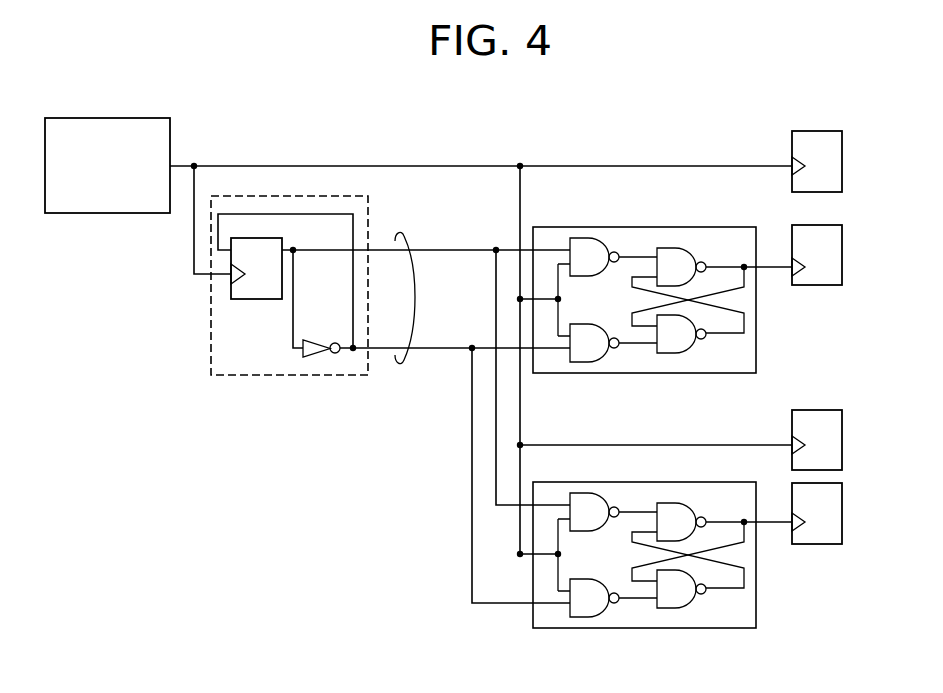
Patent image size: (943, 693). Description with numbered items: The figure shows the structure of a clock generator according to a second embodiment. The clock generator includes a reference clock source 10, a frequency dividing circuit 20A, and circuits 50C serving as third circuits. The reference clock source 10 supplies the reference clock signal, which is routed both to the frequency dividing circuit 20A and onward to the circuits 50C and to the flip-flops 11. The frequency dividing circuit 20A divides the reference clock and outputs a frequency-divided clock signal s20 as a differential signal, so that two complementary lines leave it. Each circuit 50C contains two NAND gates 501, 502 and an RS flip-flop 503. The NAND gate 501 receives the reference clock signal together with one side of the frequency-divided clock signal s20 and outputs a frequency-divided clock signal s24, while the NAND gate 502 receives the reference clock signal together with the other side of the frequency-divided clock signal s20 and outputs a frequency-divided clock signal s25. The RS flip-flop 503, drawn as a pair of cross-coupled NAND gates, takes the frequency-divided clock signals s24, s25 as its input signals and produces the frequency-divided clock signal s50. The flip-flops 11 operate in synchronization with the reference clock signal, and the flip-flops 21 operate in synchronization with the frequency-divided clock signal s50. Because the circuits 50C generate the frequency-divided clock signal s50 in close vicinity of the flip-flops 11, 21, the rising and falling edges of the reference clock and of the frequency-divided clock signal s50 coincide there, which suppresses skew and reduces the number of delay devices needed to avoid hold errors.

The reference clock source 10 is at (170, 143).
The frequency dividing circuit 20A is at (210, 350).
The frequency-divided clock signal s20 is at (413, 295).
The NAND gate 501 is at (587, 238).
The NAND gate 502 is at (582, 364).
The RS flip-flop 503 is at (728, 235).
The frequency-divided clock signal s24 is at (635, 257).
The frequency-divided clock signal s25 is at (636, 348).
The circuit 50C is at (708, 373).
The frequency-divided clock signal s50 is at (773, 268).
The flip-flop 11 is at (842, 160).
The flip-flop 21 is at (842, 255).